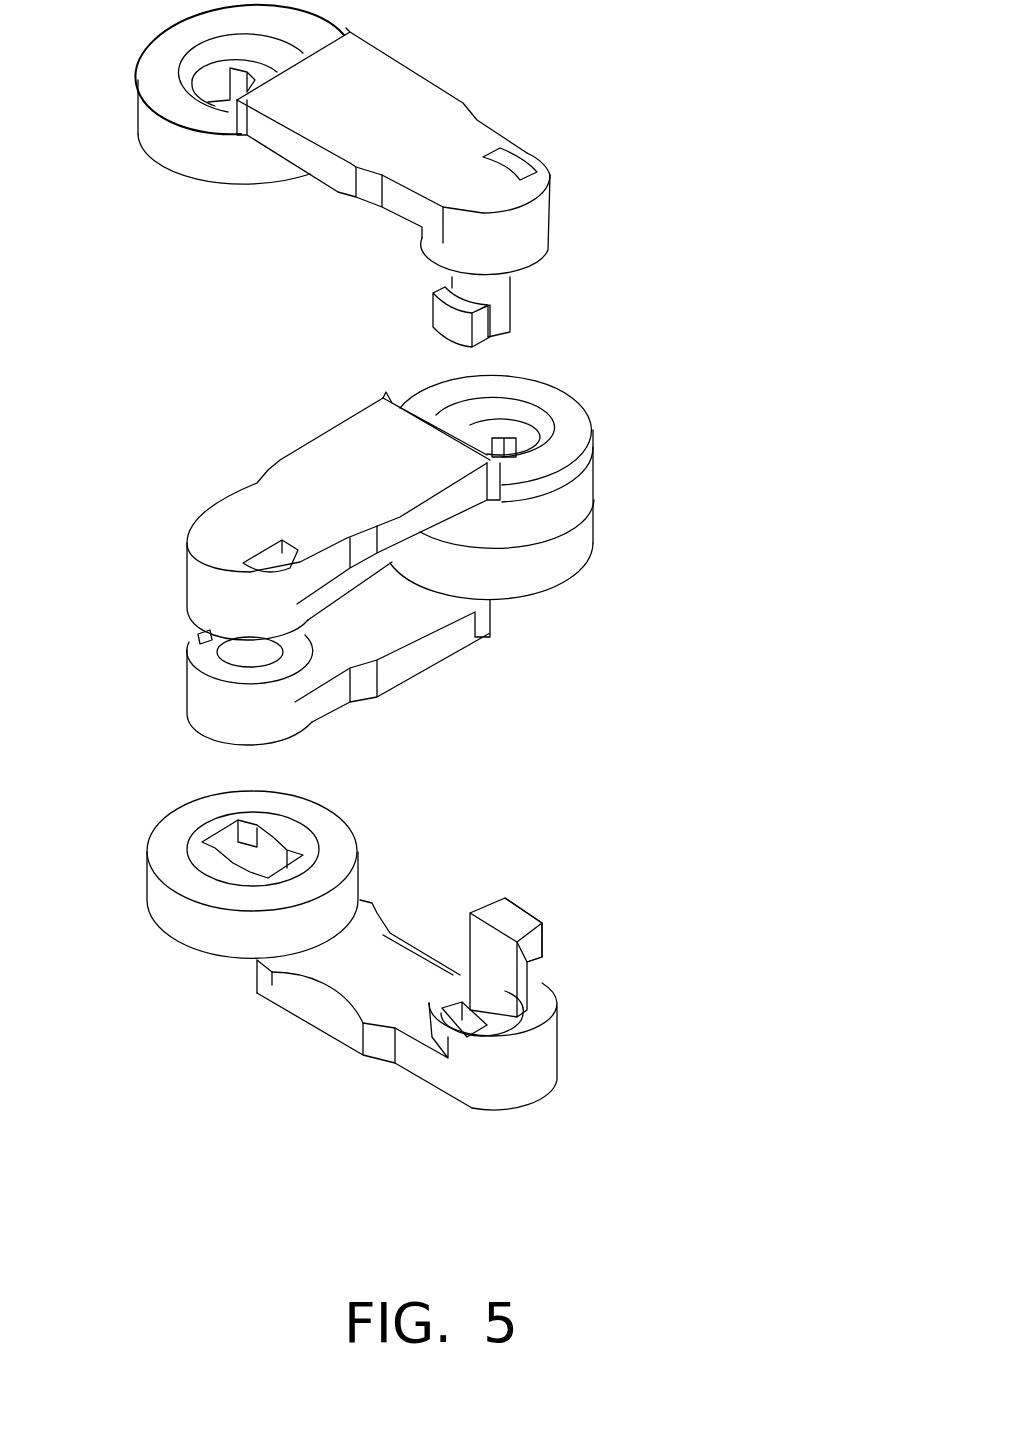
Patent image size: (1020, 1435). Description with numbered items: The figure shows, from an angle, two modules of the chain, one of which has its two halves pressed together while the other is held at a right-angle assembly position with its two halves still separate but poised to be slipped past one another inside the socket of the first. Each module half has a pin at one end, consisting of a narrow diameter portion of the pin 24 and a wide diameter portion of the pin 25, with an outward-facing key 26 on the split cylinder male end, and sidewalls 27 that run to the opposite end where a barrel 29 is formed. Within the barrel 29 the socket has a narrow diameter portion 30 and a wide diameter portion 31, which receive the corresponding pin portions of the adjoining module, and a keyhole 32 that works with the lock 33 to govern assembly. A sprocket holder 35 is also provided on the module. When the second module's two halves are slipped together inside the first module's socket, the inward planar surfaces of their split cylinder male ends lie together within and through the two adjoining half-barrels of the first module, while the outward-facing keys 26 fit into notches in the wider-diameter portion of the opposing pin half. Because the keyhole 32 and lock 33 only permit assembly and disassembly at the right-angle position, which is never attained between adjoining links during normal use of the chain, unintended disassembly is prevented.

The narrow diameter portion of the pin 24 is at (525, 985).
The wide diameter portion of the pin 25 is at (558, 1060).
The key 26 is at (545, 905).
The sidewalls 27 is at (338, 190).
The barrel 29 is at (573, 454).
The narrow diameter portion of the socket within the barrel 30 is at (540, 455).
The wide diameter portion of the socket within the barrel 31 is at (548, 415).
The keyhole 32 is at (518, 435).
The lock 33 is at (472, 438).
The sprocket holder 35 is at (380, 633).